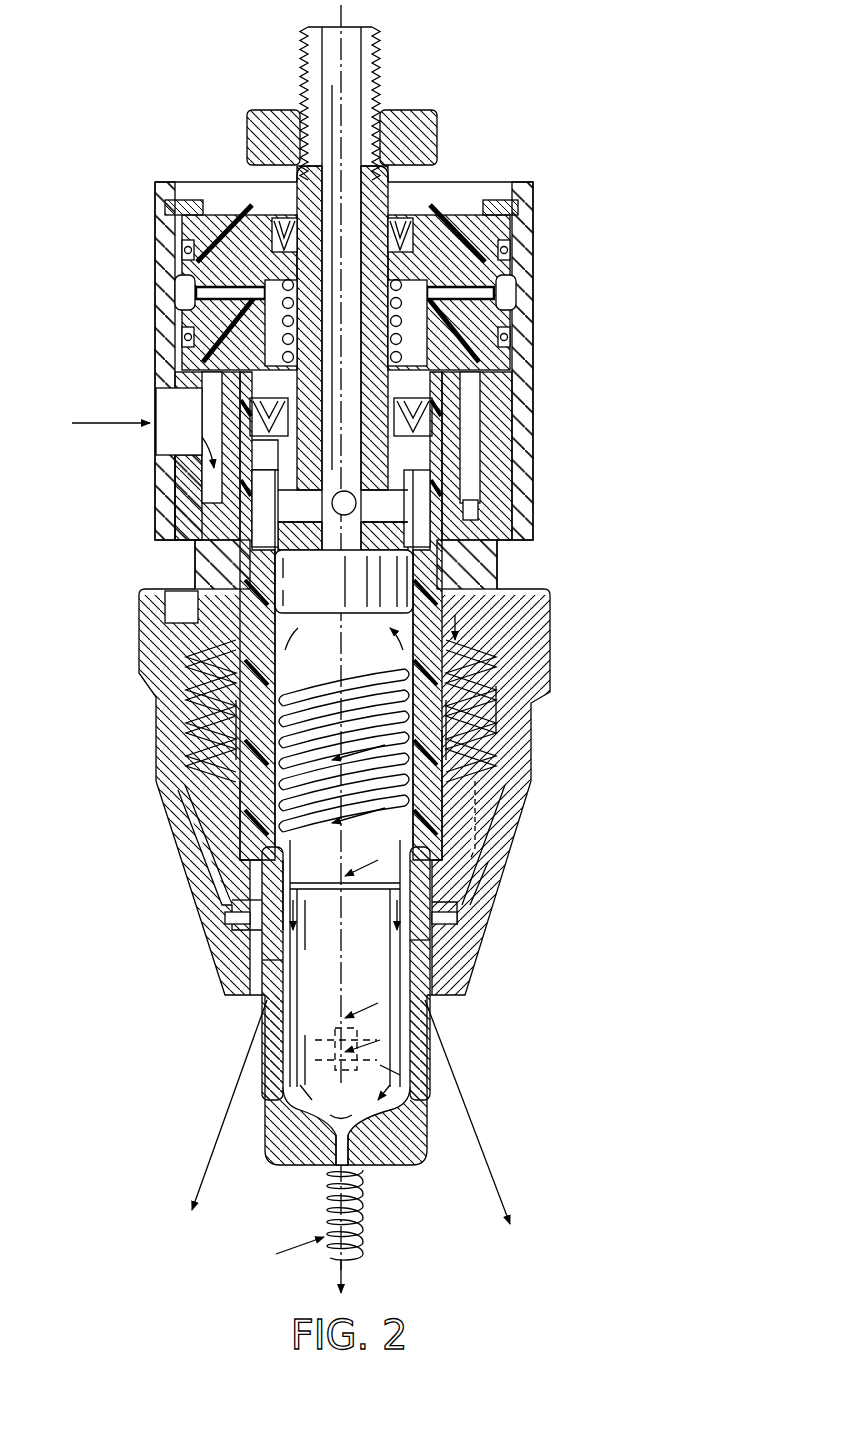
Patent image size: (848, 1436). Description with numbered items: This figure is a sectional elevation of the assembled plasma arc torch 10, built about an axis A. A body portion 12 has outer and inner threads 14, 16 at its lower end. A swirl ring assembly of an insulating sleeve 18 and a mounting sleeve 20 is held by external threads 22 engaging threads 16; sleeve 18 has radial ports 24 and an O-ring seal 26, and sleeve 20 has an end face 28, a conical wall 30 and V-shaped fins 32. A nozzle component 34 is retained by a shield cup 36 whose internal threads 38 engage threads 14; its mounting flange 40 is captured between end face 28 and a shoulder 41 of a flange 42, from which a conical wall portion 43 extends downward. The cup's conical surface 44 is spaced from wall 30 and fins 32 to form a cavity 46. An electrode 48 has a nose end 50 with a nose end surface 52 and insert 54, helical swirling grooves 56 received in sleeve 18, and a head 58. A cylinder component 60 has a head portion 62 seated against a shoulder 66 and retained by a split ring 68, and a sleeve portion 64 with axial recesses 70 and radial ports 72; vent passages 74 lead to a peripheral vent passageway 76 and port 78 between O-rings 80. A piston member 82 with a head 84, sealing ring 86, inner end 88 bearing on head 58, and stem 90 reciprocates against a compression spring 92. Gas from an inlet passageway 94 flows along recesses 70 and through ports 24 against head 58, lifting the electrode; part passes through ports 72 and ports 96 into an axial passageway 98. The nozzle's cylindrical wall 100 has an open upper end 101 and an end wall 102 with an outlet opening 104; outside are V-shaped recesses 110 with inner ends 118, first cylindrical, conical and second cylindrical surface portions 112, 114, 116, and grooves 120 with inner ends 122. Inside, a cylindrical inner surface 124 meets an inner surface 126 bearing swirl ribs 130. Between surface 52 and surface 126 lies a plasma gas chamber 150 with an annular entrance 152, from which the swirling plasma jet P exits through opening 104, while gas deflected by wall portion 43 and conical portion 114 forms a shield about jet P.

The plasma arc torch 10 is at (690, 388).
The body portion 12 is at (150, 513).
The outer threads 14 is at (505, 675).
The inner threads 16 is at (464, 723).
The sleeve of insulating material 18 is at (444, 744).
The mounting sleeve 20 is at (480, 868).
The external threads 22 is at (229, 711).
The ports 24 is at (457, 648).
The O-ring seal 26 is at (499, 552).
The end face 28 is at (459, 916).
The conical wall 30 is at (258, 890).
The V-shaped fins 32 is at (205, 800).
The nozzle component 34 is at (264, 1048).
The shield cup 36 is at (204, 933).
The internal threads 38 is at (499, 678).
The mounting flange 40 is at (459, 921).
The shoulder 41 is at (240, 923).
The flange 42 is at (251, 964).
The conical wall portion 43 is at (264, 927).
The conical surface 44 is at (490, 812).
The cavity 46 is at (199, 823).
The electrode 48 is at (296, 997).
The nose end 50 is at (368, 1046).
The nose end surface 52 is at (412, 1082).
The insert 54 is at (382, 1073).
The helical swirling grooves 56 is at (218, 742).
The head 58 is at (290, 576).
The cylinder component 60 is at (485, 383).
The head portion 62 is at (514, 319).
The sleeve portion 64 is at (445, 515).
The shoulder 66 is at (494, 366).
The split ring 68 is at (492, 196).
The recesses 70 is at (237, 524).
The ports 72 is at (252, 492).
The vent passages 74 is at (497, 276).
The peripheral vent passageway 76 is at (502, 291).
The port 78 is at (160, 292).
The O-rings 80 is at (182, 248).
The piston member 82 is at (467, 456).
The head 84 is at (199, 392).
The annular sealing ring 86 is at (440, 417).
The axially inner end 88 is at (465, 520).
The stem 90 is at (390, 192).
The compression spring 92 is at (186, 276).
The inlet passageway 94 is at (165, 437).
The ports 96 is at (338, 497).
The axial passageway 98 is at (354, 62).
The cylindrical wall 100 is at (418, 985).
The upper end 101 is at (488, 862).
The end wall 102 is at (397, 1148).
The plasma arc outlet opening 104 is at (340, 1138).
The V-shaped recesses 110 is at (240, 908).
The first cylindrical surface portion 112 is at (432, 946).
The conical surface portion 114 is at (430, 1018).
The second cylindrical surface portion 116 is at (338, 1133).
The radially inner end 118 is at (261, 927).
The grooves 120 is at (252, 864).
The radially inner ends 122 is at (258, 878).
The cylindrical inner surface 124 is at (435, 962).
The inner surface 126 is at (395, 1153).
The swirl ribs 130 is at (287, 1105).
The plasma gas chamber 150 is at (355, 1110).
The annular entrance 152 is at (408, 1073).
The axis A is at (345, 102).
The plasma jet P is at (290, 1257).